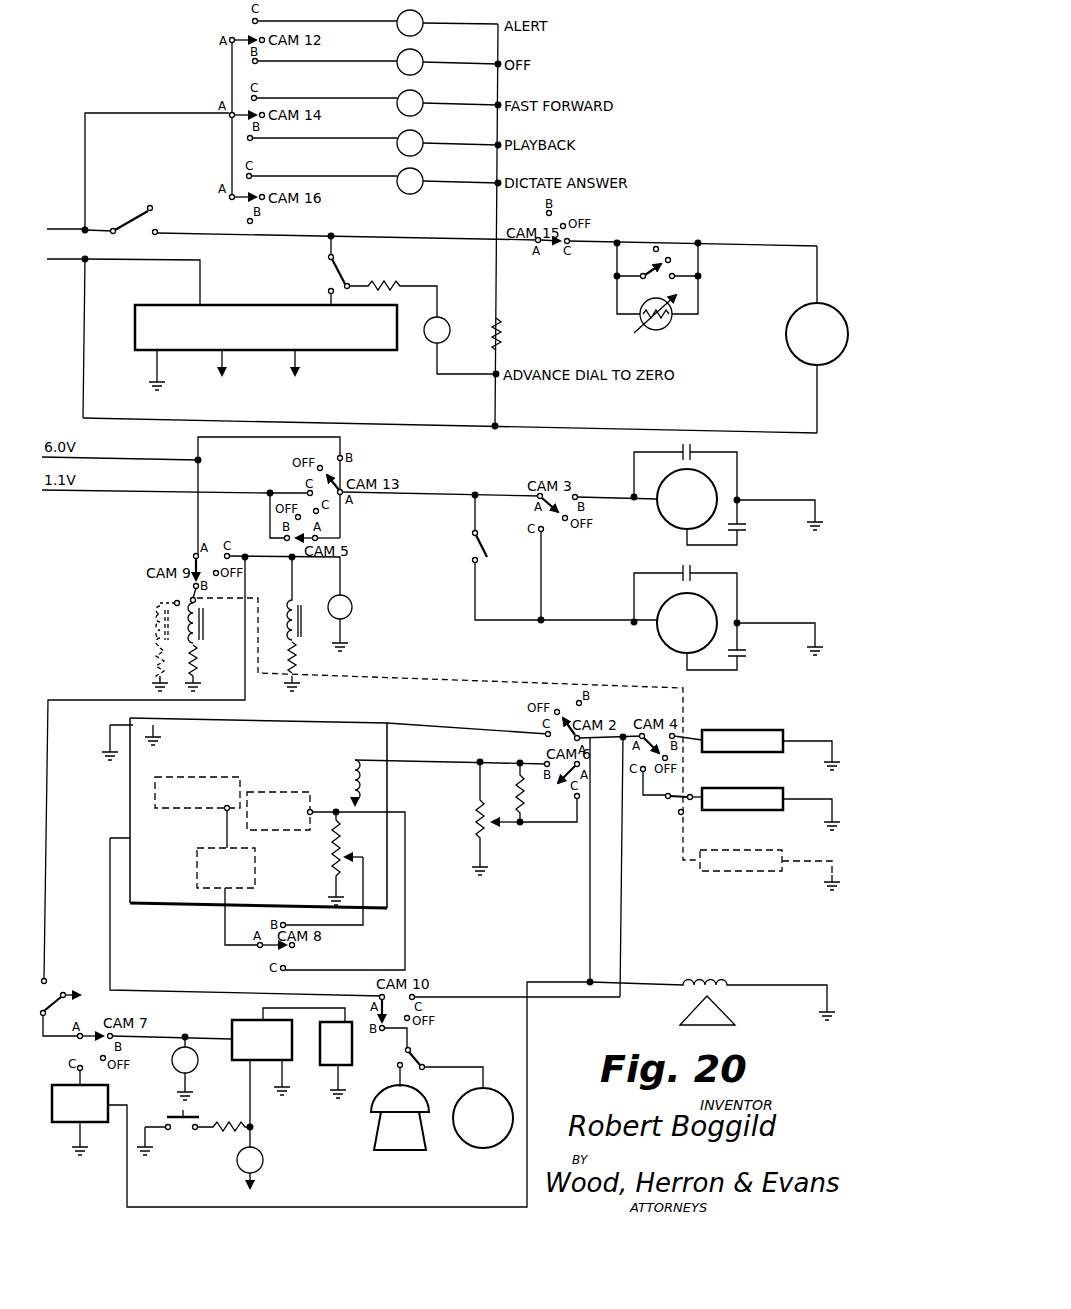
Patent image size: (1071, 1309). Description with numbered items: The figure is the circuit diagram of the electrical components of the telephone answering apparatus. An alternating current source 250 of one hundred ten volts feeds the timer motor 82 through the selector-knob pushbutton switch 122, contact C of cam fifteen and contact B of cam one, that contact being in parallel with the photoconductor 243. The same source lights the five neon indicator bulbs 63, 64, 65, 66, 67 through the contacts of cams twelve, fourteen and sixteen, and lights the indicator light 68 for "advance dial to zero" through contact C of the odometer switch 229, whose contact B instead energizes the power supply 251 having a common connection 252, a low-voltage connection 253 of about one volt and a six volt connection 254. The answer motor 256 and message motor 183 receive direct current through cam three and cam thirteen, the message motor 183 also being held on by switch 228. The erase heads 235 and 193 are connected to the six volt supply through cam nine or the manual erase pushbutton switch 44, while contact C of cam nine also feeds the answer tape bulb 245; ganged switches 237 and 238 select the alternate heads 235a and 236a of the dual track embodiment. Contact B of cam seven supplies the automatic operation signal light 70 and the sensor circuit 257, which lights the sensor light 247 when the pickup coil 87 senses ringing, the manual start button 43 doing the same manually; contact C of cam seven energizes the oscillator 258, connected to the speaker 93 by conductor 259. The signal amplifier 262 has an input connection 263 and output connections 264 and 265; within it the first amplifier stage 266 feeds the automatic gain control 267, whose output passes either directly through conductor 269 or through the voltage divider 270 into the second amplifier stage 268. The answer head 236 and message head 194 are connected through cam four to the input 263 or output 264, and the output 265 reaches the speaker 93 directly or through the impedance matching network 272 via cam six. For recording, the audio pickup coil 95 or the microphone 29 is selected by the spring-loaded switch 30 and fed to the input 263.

The neon indicator bulb 63 is at (422, 14).
The neon indicator bulb 64 is at (422, 53).
The neon indicator bulb 65 is at (422, 94).
The neon indicator bulb 66 is at (422, 134).
The neon indicator bulb 67 is at (422, 172).
The timer motor 82 is at (826, 302).
The pushbutton switch 122 is at (133, 233).
The 110 volt source 250 is at (63, 210).
The power supply 251 is at (393, 352).
The common connection 252 is at (152, 372).
The 1.1 volt connection 253 is at (220, 372).
The 6 volt connection 254 is at (292, 372).
The odometer switch 229 is at (322, 272).
The indicator light 68 is at (446, 318).
The photoconductor 243 is at (668, 330).
The answer motor 256 is at (718, 487).
The message motor 183 is at (718, 612).
The switch 228 is at (484, 566).
The answer tape bulb 245 is at (353, 607).
The ganged switch 237 is at (192, 598).
The erase head 235 is at (205, 625).
The alternate erase head 235a is at (152, 648).
The erase head 193 is at (283, 657).
The signal amplifier 262 is at (330, 718).
The output connection 264 is at (392, 722).
The output 265 is at (388, 770).
The first amplifier stage 266 is at (192, 779).
The automatic gain control 267 is at (195, 870).
The second amplifier stage 268 is at (287, 830).
The input connection 263 is at (130, 838).
The voltage divider 270 is at (355, 833).
The conductor 269 is at (405, 893).
The impedance matching network 272 is at (522, 830).
The message head 194 is at (787, 728).
The answer head 236 is at (722, 812).
The alternate answer head 236a is at (733, 873).
The ganged switch 238 is at (672, 805).
The manual erase pushbutton switch 44 is at (51, 986).
The sensor circuit 257 is at (243, 1020).
The automatic operation signal light 70 is at (198, 1065).
The oscillator 258 is at (51, 1090).
The manual start button 43 is at (180, 1135).
The sensor light 247 is at (263, 1163).
The pickup coil 87 is at (325, 1070).
The spring-loaded switch 30 is at (420, 1058).
The audio pickup coil 95 is at (491, 1088).
The microphone 29 is at (396, 1152).
The speaker 93 is at (720, 1012).
The conductor 259 is at (438, 1208).